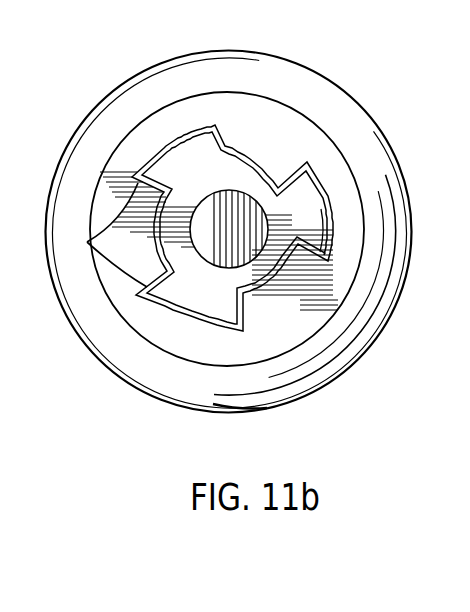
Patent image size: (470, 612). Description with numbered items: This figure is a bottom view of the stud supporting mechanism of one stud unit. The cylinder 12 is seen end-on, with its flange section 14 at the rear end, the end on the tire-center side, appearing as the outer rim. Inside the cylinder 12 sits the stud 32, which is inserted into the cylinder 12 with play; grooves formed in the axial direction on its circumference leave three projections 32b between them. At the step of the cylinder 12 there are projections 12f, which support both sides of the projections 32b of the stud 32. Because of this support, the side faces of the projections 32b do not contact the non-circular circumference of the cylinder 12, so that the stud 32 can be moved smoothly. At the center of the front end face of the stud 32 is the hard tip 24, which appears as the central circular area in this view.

The cylinder 12 is at (398, 133).
The projections 12f is at (290, 178).
The flange section 14 is at (358, 337).
The hard tip 24 is at (213, 250).
The stud 32 is at (316, 217).
The projections 32b is at (181, 167).